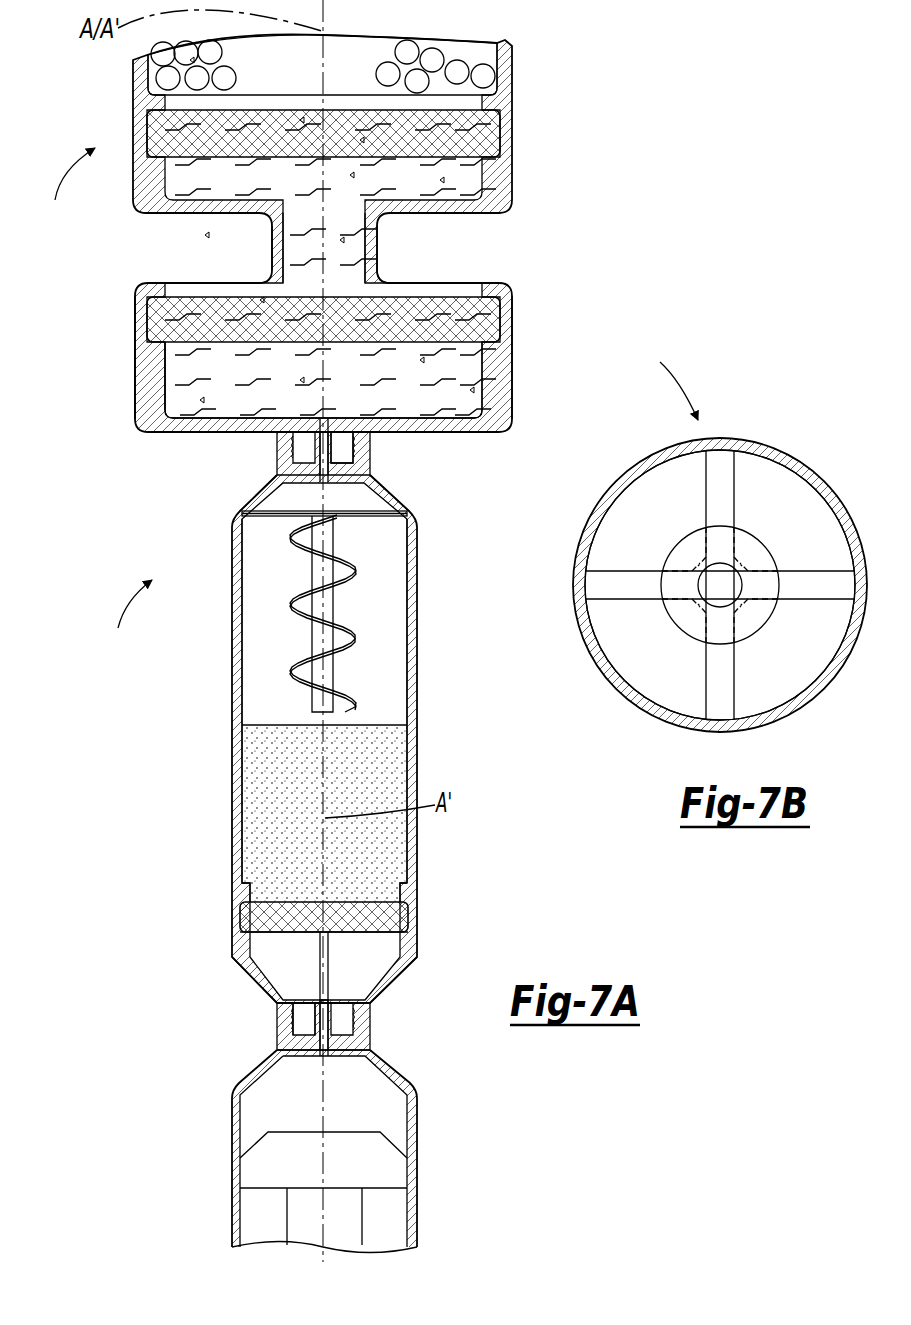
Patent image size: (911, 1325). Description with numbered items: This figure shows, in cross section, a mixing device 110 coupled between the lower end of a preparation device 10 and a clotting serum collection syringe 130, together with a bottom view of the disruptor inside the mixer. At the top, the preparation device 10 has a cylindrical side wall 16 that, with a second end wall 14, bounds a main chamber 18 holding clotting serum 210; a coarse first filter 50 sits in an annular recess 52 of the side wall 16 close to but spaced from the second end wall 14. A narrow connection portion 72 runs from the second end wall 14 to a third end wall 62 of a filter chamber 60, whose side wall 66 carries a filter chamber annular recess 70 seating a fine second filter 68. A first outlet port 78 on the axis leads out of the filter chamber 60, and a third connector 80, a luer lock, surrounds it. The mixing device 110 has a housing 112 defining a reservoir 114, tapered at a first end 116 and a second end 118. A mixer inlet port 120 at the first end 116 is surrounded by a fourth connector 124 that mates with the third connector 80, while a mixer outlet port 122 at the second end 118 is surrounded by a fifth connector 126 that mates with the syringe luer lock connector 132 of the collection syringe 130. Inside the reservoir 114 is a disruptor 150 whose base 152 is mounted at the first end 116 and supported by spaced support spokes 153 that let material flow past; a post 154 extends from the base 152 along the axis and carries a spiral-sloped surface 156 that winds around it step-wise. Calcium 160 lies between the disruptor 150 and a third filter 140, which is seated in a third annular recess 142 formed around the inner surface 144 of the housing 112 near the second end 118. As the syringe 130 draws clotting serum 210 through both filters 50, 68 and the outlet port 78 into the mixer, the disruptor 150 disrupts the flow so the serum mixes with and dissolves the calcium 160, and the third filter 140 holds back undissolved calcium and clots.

In FIG. 7A, the preparation device 10 is at (64, 184).
In FIG. 7A, the second end wall 14 is at (480, 230).
In FIG. 7A, the side wall 16 is at (513, 88).
In FIG. 7A, the main chamber 18 is at (475, 45).
In FIG. 7A, the first filter 50 is at (500, 125).
In FIG. 7A, the annular recess 52 is at (505, 138).
In FIG. 7A, the filter chamber 60 is at (170, 385).
In FIG. 7A, the third end wall 62 is at (200, 283).
In FIG. 7A, the side wall 66 is at (140, 350).
In FIG. 7A, the second filter 68 is at (477, 320).
In FIG. 7A, the filter chamber annular recess 70 is at (500, 330).
In FIG. 7A, the connection portion 72 is at (270, 258).
In FIG. 7A, the first outlet port 78 is at (335, 455).
In FIG. 7A, the third connector 80 is at (285, 440).
In FIG. 7A, the mixing device 110 is at (121, 614).
In FIG. 7B, the mixing device 110 is at (662, 382).
In FIG. 7A, the housing 112 is at (416, 582).
In FIG. 7B, the housing 112 is at (806, 465).
In FIG. 7A, the reservoir 114 is at (406, 585).
In FIG. 7B, the reservoir 114 is at (680, 470).
In FIG. 7A, the first end 116 is at (255, 490).
In FIG. 7A, the second end 118 is at (388, 992).
In FIG. 7A, the mixer inlet port 120 is at (320, 474).
In FIG. 7A, the mixer outlet port 122 is at (300, 1010).
In FIG. 7A, the fourth connector 124 is at (358, 440).
In FIG. 7A, the fifth connector 126 is at (356, 1030).
In FIG. 7A, the clotting serum collection syringe 130 is at (417, 1128).
In FIG. 7A, the syringe luer lock connector 132 is at (292, 1030).
In FIG. 7A, the third filter 140 is at (385, 915).
In FIG. 7A, the third annular recess 142 is at (410, 926).
In FIG. 7A, the inner surface 144 is at (245, 878).
In FIG. 7A, the disruptor 150 is at (305, 636).
In FIG. 7B, the disruptor 150 is at (683, 535).
In FIG. 7A, the base 152 is at (273, 518).
In FIG. 7A, the support spokes 153 is at (395, 512).
In FIG. 7B, the support spokes 153 is at (720, 485).
In FIG. 7A, the post 154 is at (332, 672).
In FIG. 7B, the post 154 is at (730, 605).
In FIG. 7A, the spiral-sloped surface 156 is at (350, 708).
In FIG. 7B, the spiral-sloped surface 156 is at (757, 573).
In FIG. 7A, the calcium 160 is at (375, 770).
In FIG. 7A, the clotting serum 210 is at (272, 80).